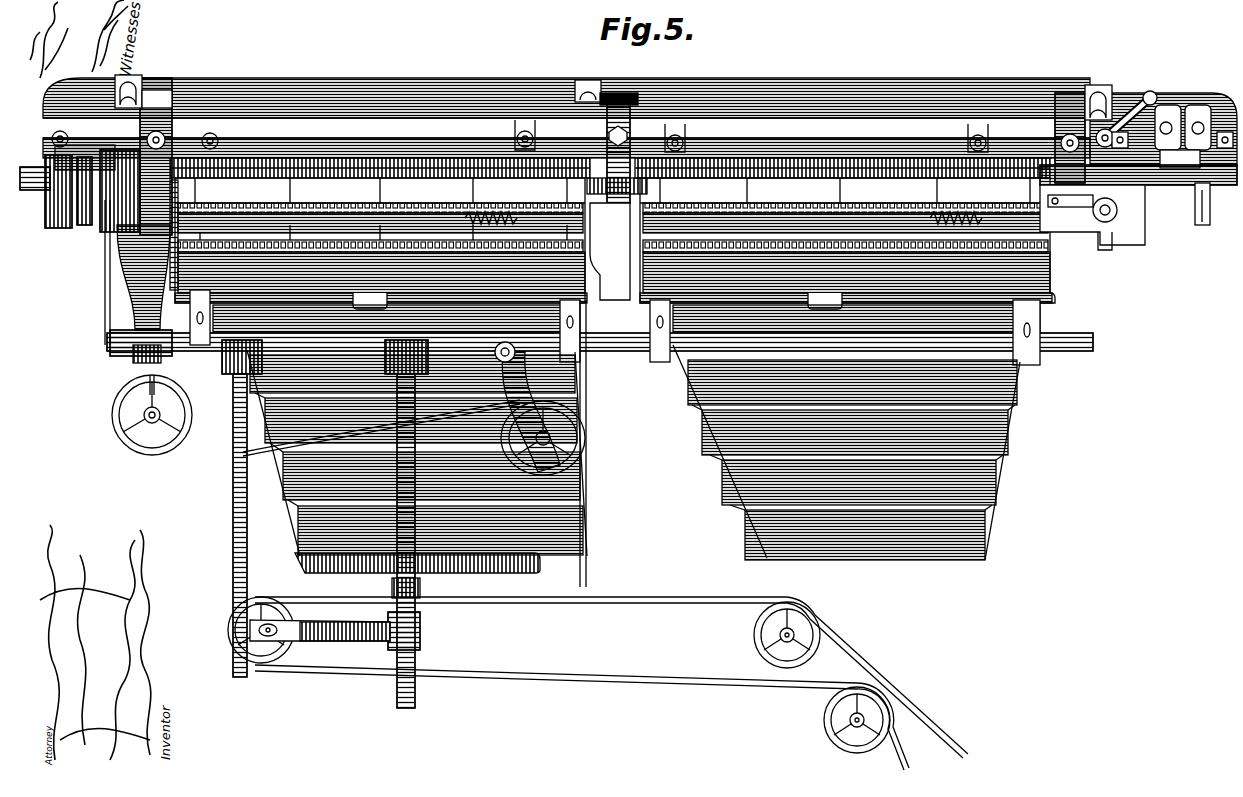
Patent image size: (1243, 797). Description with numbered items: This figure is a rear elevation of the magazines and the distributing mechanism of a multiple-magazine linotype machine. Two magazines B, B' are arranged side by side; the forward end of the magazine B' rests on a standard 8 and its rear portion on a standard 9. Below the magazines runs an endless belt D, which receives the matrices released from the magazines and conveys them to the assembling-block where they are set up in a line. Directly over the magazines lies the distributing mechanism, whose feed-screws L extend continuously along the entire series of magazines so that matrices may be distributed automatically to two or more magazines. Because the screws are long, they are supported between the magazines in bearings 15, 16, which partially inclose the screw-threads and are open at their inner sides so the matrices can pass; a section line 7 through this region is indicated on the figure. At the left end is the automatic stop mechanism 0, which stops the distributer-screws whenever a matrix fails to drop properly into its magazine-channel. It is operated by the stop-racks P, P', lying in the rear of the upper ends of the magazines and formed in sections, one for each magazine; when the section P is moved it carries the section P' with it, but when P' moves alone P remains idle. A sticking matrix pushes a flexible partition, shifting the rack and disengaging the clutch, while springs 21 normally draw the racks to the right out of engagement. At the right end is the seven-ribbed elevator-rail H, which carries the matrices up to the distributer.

The springs 7 is at (590, 82).
The bearing 16 is at (607, 152).
The feed-screws L is at (368, 165).
The stop-rack section P' is at (381, 243).
The stop-rack section P is at (847, 243).
The springs 21 is at (502, 213).
The bearing 15 is at (610, 251).
The elevator-rail H is at (1186, 190).
The automatic stop mechanism 0 is at (60, 208).
The standard 9 is at (233, 578).
The standard 8 is at (414, 700).
The magazine B' is at (415, 473).
The magazine B is at (846, 470).
The endless belt D is at (600, 675).